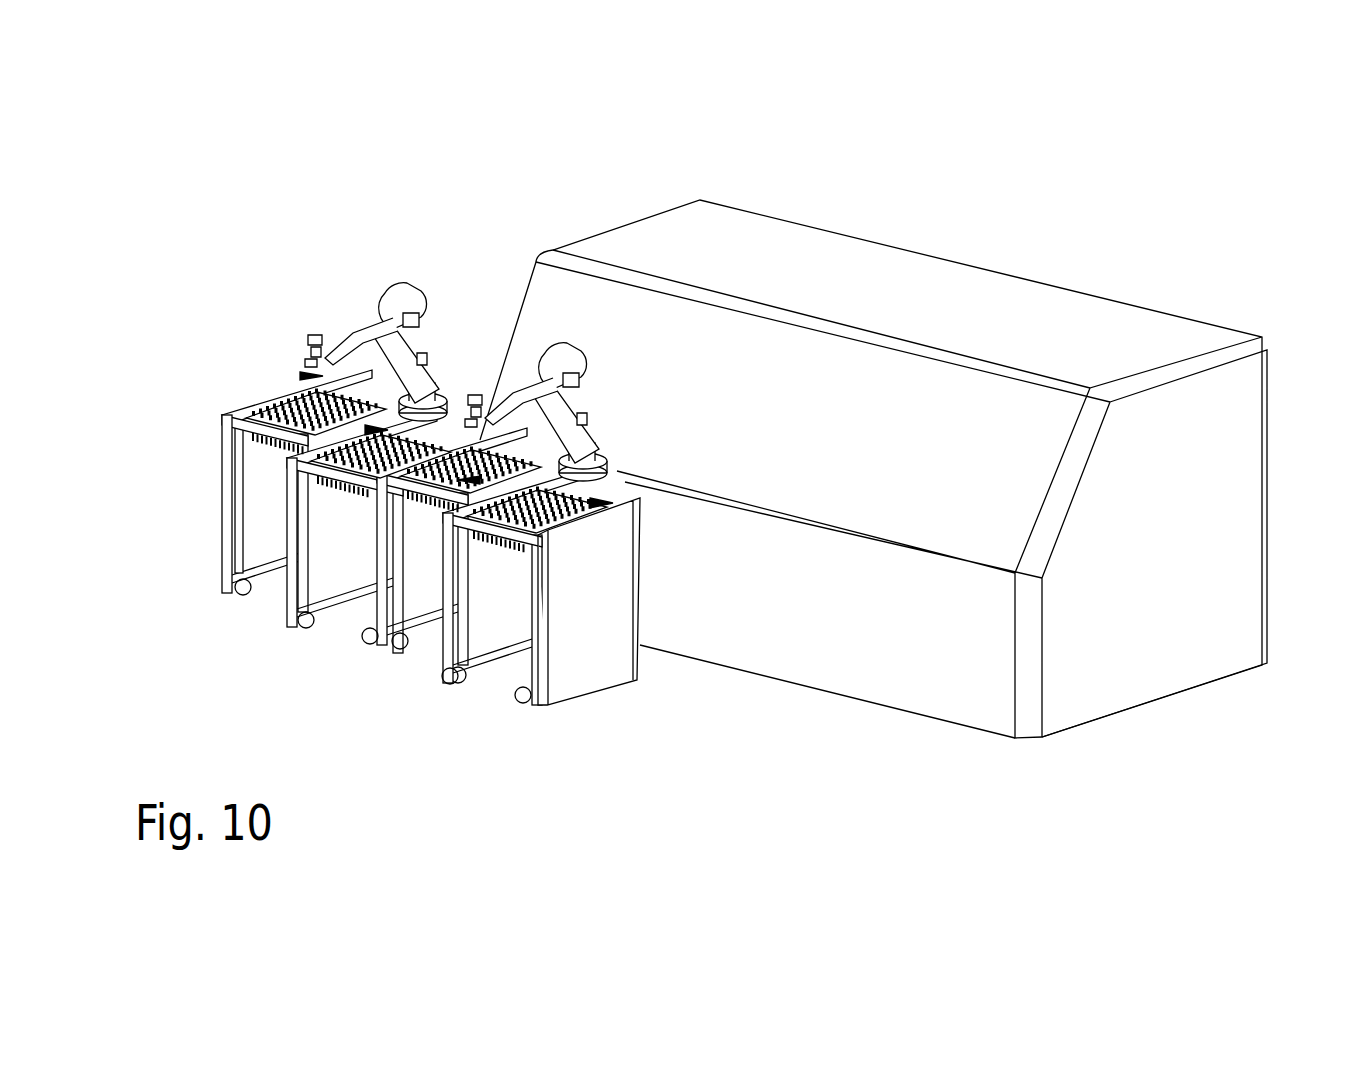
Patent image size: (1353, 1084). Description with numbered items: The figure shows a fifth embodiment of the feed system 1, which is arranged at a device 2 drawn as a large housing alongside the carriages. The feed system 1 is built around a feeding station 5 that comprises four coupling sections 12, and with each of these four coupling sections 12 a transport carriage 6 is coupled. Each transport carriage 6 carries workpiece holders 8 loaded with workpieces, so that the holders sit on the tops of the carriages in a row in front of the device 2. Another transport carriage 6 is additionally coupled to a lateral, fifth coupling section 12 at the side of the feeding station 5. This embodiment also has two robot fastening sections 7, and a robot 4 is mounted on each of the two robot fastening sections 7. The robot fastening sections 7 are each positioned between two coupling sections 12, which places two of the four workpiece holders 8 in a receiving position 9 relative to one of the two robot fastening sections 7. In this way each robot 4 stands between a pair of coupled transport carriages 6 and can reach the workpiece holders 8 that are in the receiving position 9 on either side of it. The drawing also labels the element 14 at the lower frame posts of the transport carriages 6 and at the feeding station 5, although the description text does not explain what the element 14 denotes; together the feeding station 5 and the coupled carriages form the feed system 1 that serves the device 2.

The feed system 1 is at (244, 290).
The device 2 is at (990, 479).
The robot 4 is at (388, 318).
The feeding station 5 is at (582, 645).
The transport carriage 6 is at (236, 590).
The robot fastening section 7 is at (452, 410).
The workpiece holder 8 is at (440, 516).
The receiving position 9 is at (305, 384).
The coupling section 12 is at (249, 548).
The cart frame post 14 is at (220, 540).